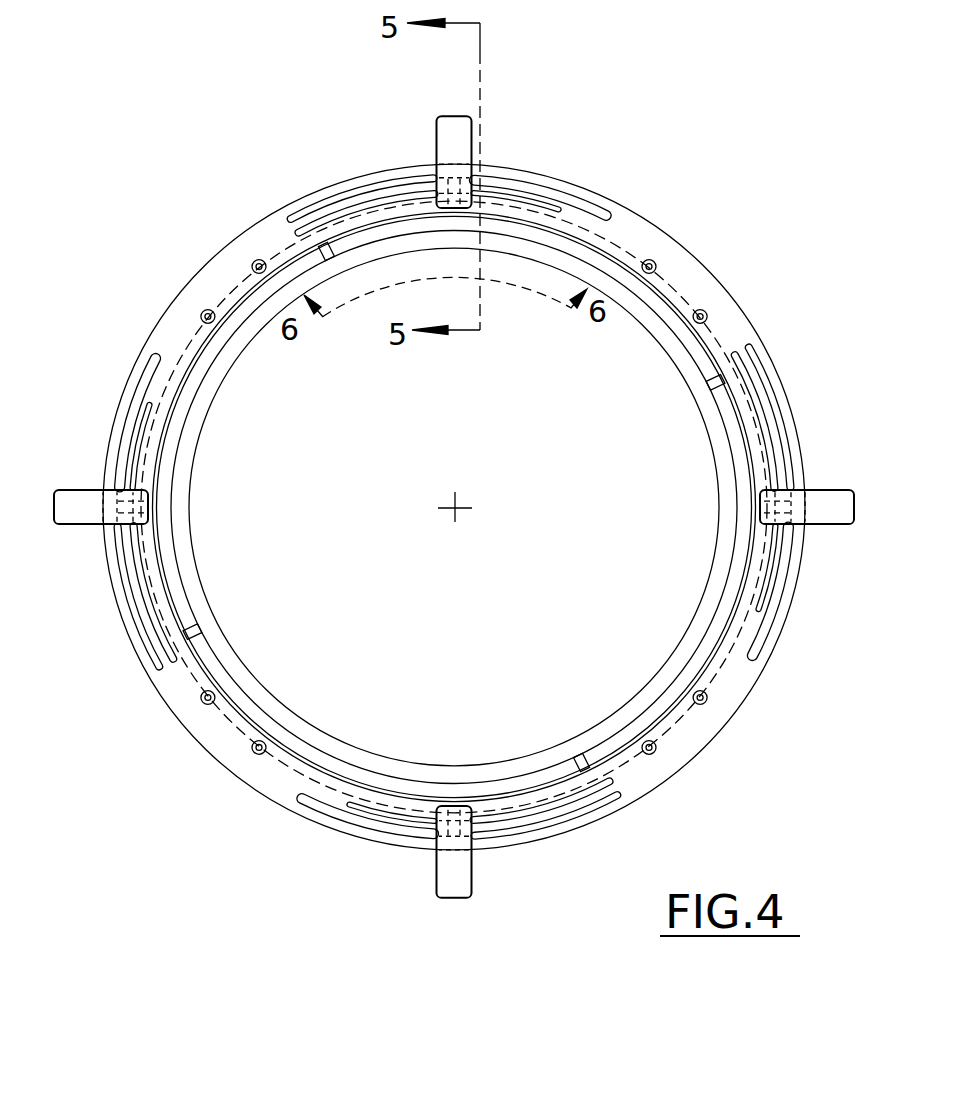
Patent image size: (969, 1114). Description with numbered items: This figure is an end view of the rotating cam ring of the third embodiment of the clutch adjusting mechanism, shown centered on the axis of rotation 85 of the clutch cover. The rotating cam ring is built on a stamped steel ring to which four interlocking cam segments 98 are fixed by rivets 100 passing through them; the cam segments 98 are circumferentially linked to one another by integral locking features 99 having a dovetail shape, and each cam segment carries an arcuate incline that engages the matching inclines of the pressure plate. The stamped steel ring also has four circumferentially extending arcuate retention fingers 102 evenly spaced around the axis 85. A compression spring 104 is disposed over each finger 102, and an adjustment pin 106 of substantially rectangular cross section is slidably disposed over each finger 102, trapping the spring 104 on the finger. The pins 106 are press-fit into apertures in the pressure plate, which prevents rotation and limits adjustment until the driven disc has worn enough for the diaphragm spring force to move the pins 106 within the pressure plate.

The axis of rotation 85 is at (462, 505).
The interlocking cam segments 98 is at (712, 482).
The integral locking features 99 is at (725, 385).
The rivets 100 is at (250, 262).
The arcuate retention fingers 102 is at (148, 405).
The compression spring 104 is at (598, 812).
The adjustment pin 106 is at (446, 128).